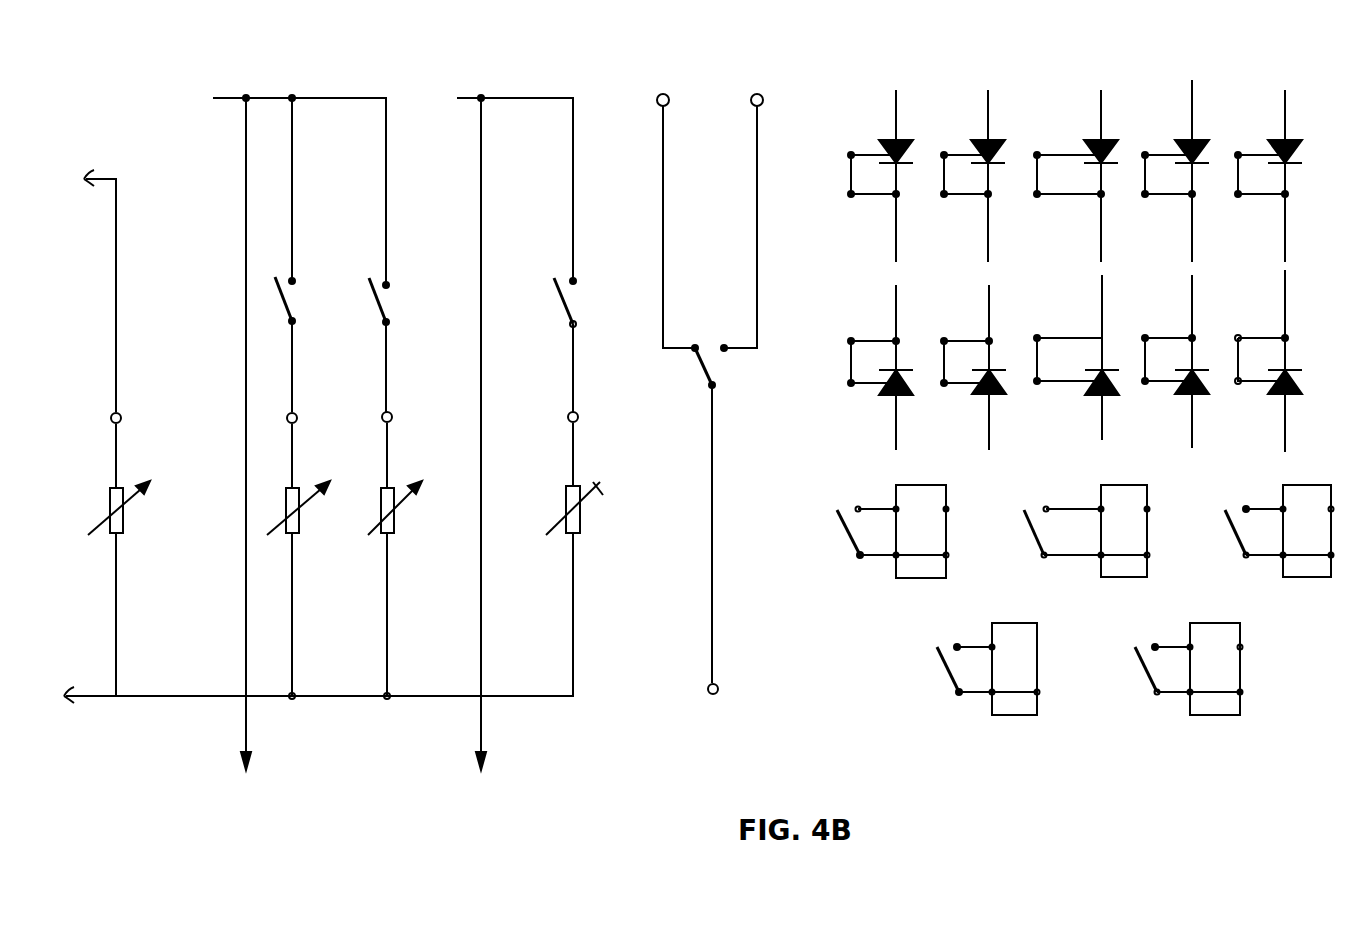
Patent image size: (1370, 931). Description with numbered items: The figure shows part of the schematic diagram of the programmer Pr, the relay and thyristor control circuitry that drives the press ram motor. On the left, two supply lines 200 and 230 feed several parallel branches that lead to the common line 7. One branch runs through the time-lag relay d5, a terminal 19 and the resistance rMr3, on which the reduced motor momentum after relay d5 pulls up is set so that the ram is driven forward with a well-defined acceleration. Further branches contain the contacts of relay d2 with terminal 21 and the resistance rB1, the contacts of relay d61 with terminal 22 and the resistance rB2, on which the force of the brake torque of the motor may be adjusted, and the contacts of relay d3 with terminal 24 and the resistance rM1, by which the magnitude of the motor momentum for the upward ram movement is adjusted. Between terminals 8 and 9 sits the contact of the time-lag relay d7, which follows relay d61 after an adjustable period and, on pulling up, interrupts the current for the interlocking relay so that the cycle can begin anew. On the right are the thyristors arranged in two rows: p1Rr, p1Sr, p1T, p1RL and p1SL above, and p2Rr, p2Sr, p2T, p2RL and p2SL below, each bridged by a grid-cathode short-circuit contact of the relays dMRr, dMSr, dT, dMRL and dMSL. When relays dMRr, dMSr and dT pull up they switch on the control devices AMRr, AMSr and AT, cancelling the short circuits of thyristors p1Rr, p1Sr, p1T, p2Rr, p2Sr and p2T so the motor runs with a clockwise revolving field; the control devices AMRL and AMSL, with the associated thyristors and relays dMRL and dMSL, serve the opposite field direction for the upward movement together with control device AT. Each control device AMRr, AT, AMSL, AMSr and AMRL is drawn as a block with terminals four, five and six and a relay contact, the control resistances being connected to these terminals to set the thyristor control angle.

The supply line 200 is at (278, 187).
The supply line 230 is at (495, 185).
The terminal 7 is at (479, 447).
The terminal 8 is at (677, 212).
The terminal 9 is at (742, 212).
The terminal 19 is at (128, 449).
The terminal 21 is at (304, 449).
The terminal 22 is at (400, 449).
The terminal 24 is at (586, 448).
The relay d2 is at (297, 255).
The relay d3 is at (576, 345).
The time-lag relay d5 is at (100, 284).
The relay d61 is at (399, 345).
The time-lag relay d7 is at (703, 363).
The resistance rMr3 is at (108, 588).
The variable resistor rB1 is at (294, 590).
The resistance rB2 is at (387, 590).
The resistance rM1 is at (333, 592).
The thyristor p1Rr is at (879, 176).
The thyristor p1Sr is at (972, 176).
The thyristor p1T is at (1084, 176).
The diode p1RL is at (1174, 171).
The diode p1SL is at (1273, 176).
The thyristor p2Rr is at (861, 367).
The thyristor p2Sr is at (955, 367).
The thyristor p2T is at (1076, 357).
The diode p2RL is at (1157, 361).
The diode p2SL is at (1267, 361).
The relay dMRr is at (851, 174).
The relay dMSr is at (948, 174).
The relay dT is at (1059, 174).
The contact dMRL is at (1151, 174).
The contact dMSL is at (1244, 174).
The control device AMRr is at (869, 543).
The control device AT is at (1067, 543).
The relay AMSL is at (1258, 543).
The control device AMSr is at (967, 680).
The relay AMRL is at (1167, 680).